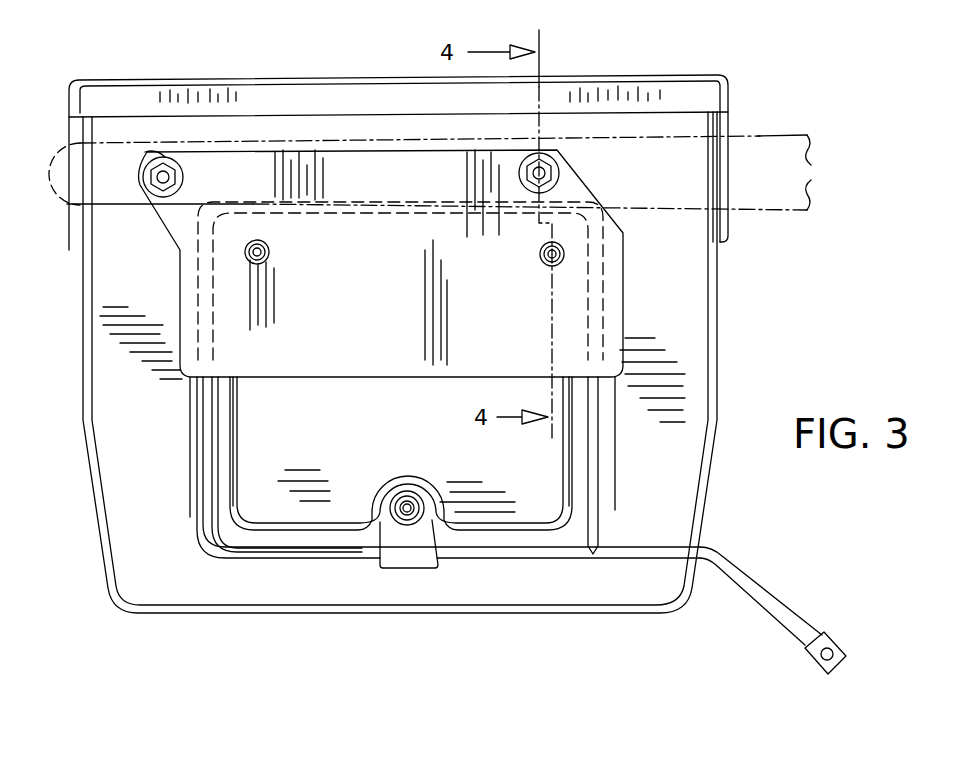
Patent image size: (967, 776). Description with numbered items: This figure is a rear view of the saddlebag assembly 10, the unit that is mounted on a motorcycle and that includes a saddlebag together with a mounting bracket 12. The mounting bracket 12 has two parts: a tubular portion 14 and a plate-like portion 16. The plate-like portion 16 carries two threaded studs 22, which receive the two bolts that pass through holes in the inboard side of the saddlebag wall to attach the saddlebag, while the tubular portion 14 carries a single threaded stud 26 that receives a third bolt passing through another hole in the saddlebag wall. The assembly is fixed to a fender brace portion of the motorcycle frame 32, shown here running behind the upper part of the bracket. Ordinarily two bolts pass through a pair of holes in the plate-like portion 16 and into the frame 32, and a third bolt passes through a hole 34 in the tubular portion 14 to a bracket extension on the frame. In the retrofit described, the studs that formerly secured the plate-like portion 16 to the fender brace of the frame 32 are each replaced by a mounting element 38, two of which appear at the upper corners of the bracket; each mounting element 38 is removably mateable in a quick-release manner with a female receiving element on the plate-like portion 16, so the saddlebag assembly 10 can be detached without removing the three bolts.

The saddlebag assembly 10 is at (717, 333).
The mounting bracket 12 is at (185, 529).
The tubular portion 14 is at (332, 555).
The plate-like portion 16 is at (625, 285).
The threaded studs 22 is at (268, 257).
The threaded stud 26 is at (420, 500).
The frame 32 is at (760, 131).
The hole 34 is at (833, 650).
The mounting element 38 is at (143, 182).